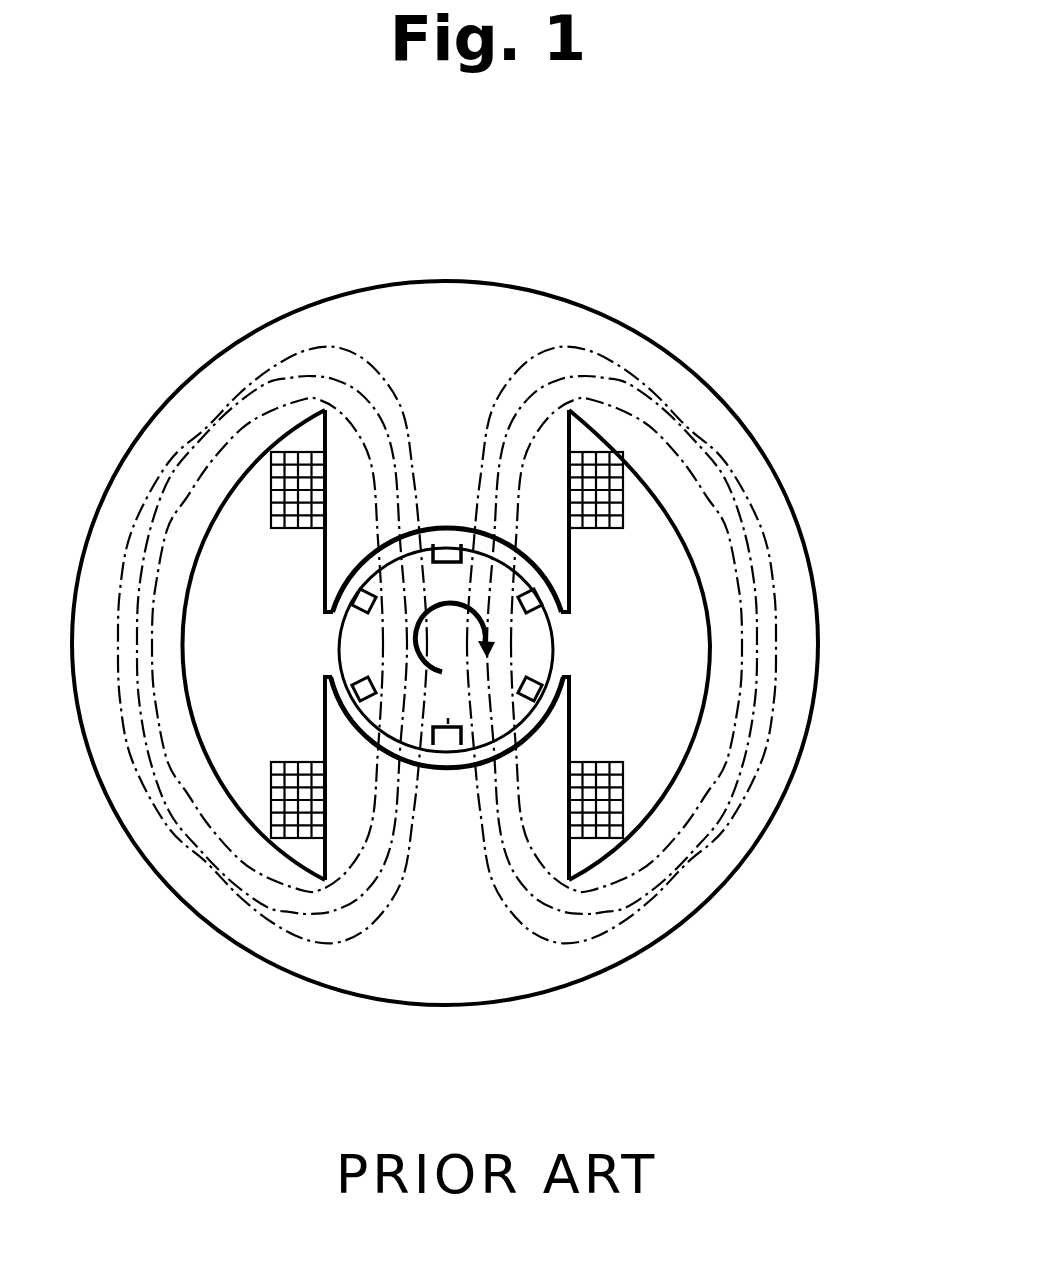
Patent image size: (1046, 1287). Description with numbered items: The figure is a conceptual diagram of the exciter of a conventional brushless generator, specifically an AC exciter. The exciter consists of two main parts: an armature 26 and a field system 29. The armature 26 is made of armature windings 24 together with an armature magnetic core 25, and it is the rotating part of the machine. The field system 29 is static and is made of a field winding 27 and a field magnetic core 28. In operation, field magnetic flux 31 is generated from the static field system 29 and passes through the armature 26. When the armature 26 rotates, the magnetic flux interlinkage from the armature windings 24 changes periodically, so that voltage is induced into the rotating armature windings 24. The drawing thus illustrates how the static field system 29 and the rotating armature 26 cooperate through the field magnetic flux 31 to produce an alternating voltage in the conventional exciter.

The armature windings 24 is at (452, 541).
The armature magnetic core 25 is at (520, 645).
The armature 26 is at (417, 702).
The field winding 27 is at (597, 476).
The field magnetic core 28 is at (729, 446).
The field system 29 is at (593, 806).
The field magnetic flux 31 is at (368, 940).